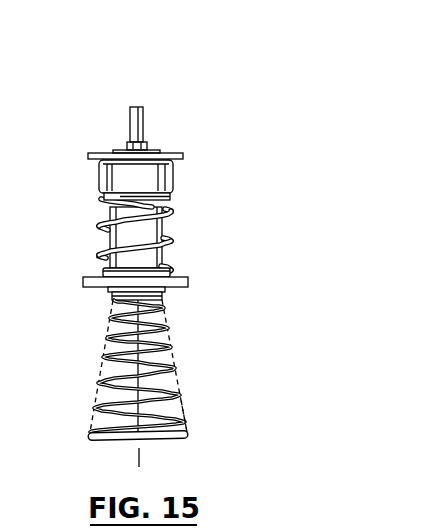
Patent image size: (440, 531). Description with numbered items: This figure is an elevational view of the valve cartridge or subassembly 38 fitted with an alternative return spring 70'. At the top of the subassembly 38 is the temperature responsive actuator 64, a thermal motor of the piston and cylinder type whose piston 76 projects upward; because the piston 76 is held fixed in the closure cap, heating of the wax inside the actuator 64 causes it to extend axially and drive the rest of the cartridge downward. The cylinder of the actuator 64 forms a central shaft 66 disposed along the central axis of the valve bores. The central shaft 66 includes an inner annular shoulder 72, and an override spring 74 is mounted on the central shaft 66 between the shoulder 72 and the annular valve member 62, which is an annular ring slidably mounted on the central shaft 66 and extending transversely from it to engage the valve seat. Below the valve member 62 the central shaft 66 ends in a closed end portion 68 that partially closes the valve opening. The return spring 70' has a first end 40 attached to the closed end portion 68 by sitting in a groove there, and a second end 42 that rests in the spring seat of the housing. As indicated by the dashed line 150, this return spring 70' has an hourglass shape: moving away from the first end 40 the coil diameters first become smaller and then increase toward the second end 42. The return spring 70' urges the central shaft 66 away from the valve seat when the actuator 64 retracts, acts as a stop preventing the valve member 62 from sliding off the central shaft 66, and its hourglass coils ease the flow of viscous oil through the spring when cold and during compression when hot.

The valve cartridge or subassembly 38 is at (109, 106).
The piston 76 is at (143, 125).
The temperature responsive actuator 64 is at (173, 182).
The central shaft 66 is at (145, 234).
The inner annular shoulder 72 is at (110, 203).
The override spring 74 is at (103, 238).
The valve member 62 is at (188, 282).
The first end 40 is at (110, 295).
The closed end portion 68 is at (165, 297).
The return spring 70' is at (174, 366).
The dashed line 150 is at (178, 400).
The second end 42 is at (88, 438).